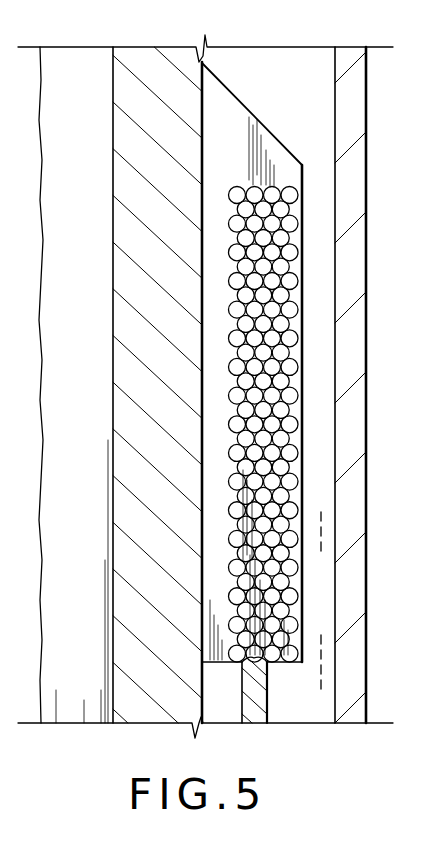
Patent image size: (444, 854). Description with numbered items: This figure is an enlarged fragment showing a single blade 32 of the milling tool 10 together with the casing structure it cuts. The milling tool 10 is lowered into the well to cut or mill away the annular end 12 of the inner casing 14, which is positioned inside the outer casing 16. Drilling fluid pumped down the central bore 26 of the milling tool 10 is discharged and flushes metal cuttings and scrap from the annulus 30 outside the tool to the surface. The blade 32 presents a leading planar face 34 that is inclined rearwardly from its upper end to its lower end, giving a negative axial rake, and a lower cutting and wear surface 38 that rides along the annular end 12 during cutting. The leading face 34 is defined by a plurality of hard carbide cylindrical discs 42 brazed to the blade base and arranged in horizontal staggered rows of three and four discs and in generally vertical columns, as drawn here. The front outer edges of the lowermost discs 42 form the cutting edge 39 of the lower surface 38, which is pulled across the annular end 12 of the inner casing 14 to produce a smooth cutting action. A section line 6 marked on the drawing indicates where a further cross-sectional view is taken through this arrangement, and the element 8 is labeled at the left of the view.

The section line 6- 6 is at (323, 528).
The heat exchanger tube 8 is at (75, 543).
The milling tool 10 is at (311, 164).
The annular end of inner casing 12 is at (268, 628).
The inner casing 14 is at (260, 709).
The outer casing 16 is at (352, 374).
The central bore 26 is at (113, 475).
The annulus 30 is at (292, 91).
The blade 32 is at (306, 408).
The leading planar face 34 is at (287, 427).
The lower cutting and wear surface 38 is at (225, 665).
The cutting edge 39 is at (247, 662).
The cylindrical carbide discs 42 is at (289, 313).